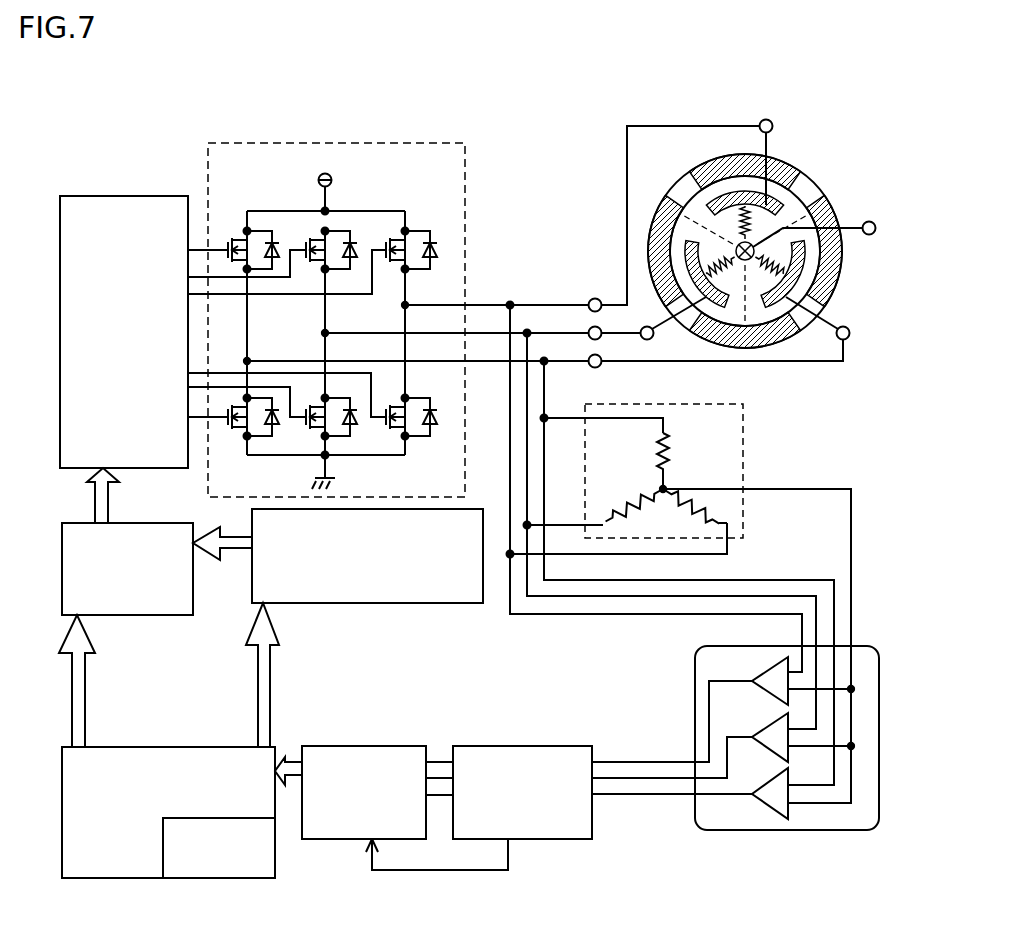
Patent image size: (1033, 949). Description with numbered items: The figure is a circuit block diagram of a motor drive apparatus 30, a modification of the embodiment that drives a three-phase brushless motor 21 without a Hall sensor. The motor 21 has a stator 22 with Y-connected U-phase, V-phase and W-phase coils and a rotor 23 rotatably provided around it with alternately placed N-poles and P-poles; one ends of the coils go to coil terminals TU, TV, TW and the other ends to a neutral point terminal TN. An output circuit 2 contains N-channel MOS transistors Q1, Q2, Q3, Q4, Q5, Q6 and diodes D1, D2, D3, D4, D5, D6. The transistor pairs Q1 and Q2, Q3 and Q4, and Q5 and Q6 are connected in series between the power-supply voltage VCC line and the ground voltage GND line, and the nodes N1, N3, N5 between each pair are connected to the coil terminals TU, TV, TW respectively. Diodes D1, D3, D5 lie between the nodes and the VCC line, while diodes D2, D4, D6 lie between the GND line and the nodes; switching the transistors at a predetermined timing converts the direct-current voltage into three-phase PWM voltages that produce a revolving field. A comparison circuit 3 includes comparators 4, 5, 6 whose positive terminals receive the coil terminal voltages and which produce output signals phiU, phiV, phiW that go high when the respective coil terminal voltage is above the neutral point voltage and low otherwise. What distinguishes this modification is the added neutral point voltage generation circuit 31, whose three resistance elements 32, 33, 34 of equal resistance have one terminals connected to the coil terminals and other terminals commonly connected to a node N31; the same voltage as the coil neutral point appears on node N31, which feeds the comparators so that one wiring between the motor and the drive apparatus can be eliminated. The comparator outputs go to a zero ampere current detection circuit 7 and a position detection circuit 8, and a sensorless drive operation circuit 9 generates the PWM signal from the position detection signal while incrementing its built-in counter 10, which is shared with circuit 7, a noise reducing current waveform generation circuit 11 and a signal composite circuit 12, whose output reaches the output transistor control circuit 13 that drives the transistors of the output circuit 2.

The motor drive apparatus 30 is at (92, 86).
The output circuit 2 is at (401, 138).
The output transistor control circuit 13 is at (168, 196).
The signal composite circuit 12 is at (72, 522).
The noise reducing current waveform generation circuit 11 is at (463, 603).
The sensorless drive operation circuit 9 is at (180, 747).
The counter 10 is at (163, 863).
The position detection circuit 8 is at (403, 746).
The zero ampere current detection circuit 7 is at (540, 746).
The comparison circuit 3 is at (838, 832).
The comparator 4 is at (756, 694).
The comparator 5 is at (756, 750).
The comparator 6 is at (756, 810).
The 3-phase brushless motor 21 is at (748, 236).
The stator 22 is at (690, 243).
The rotor 23 is at (803, 166).
The neutral point voltage generation circuit 31 is at (743, 431).
The resistance element 32 is at (693, 512).
The resistance element 33 is at (630, 500).
The resistance element 34 is at (669, 452).
The N-channel MOS transistor Q1 is at (230, 243).
The N-channel MOS transistor Q2 is at (229, 426).
The N-channel MOS transistor Q3 is at (305, 258).
The N-channel MOS transistor Q4 is at (305, 412).
The N-channel MOS transistor Q5 is at (383, 245).
The N-channel MOS transistor Q6 is at (384, 412).
The diode D1 is at (279, 250).
The diode D2 is at (281, 420).
The diode D3 is at (356, 258).
The diode D4 is at (360, 420).
The diode D5 is at (437, 250).
The diode D6 is at (440, 425).
The node N1 is at (250, 360).
The node N3 is at (328, 332).
The node N5 is at (408, 304).
The node N31 is at (667, 490).
The coil terminal TU is at (764, 119).
The coil terminal TV is at (647, 340).
The coil terminal TW is at (846, 326).
The neutral point terminal TN is at (869, 221).
The power-supply voltage VCC is at (322, 181).
The ground voltage GND is at (350, 484).
The output signal phiU is at (626, 760).
The output signal phiV is at (625, 780).
The output signal phiW is at (669, 797).